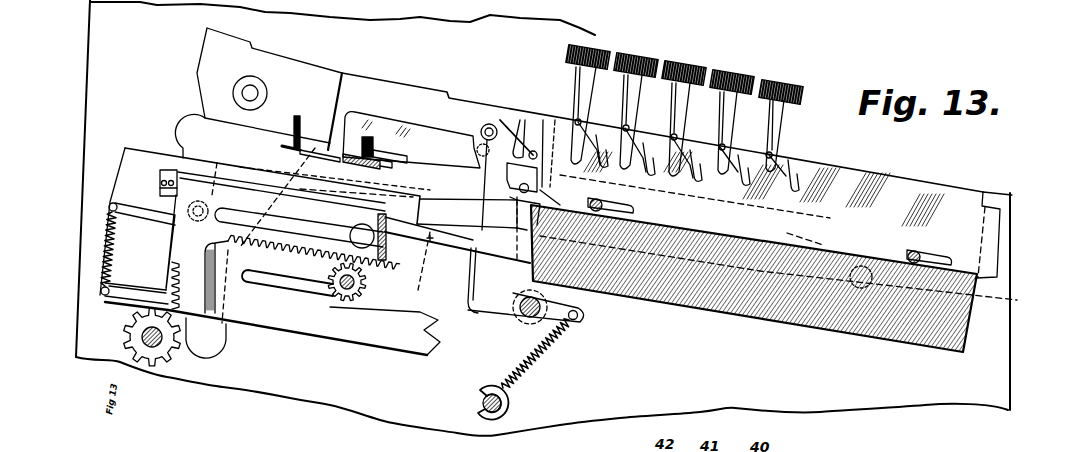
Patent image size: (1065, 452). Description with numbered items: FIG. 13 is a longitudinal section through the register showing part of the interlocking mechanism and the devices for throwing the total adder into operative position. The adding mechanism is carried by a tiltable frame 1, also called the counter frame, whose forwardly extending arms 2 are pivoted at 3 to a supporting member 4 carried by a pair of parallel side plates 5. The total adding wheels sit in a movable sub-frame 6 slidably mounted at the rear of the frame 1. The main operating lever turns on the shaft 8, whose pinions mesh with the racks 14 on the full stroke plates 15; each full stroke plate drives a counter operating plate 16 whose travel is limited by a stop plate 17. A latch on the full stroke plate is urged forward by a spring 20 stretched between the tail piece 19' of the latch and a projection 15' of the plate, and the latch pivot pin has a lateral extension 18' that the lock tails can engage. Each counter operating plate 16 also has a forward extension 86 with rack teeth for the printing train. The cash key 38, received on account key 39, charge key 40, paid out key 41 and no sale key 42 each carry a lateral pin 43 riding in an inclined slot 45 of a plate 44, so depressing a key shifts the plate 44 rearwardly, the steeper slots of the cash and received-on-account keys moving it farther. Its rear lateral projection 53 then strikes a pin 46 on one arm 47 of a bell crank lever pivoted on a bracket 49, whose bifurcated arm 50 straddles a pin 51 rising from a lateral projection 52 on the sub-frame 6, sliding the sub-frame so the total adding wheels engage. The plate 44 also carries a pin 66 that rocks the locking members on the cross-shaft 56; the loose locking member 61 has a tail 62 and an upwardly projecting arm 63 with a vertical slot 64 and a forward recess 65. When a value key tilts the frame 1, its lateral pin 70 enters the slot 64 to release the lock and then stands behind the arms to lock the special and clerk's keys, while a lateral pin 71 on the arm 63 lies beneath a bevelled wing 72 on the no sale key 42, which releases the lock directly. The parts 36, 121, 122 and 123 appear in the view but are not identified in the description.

The tiltable frame 1 is at (402, 102).
The forwardly extending arms 2 is at (806, 203).
The pivot 3 is at (888, 247).
The supporting member 4 is at (883, 327).
The side plates 5 is at (592, 48).
The sub-frame 6 is at (300, 72).
The shaft 8 is at (344, 300).
The racks 14 is at (280, 278).
The full stroke plates 15 is at (214, 278).
The projection 15' is at (128, 274).
The counter operating plate 16 is at (147, 148).
The stop plate 17 is at (440, 250).
The lateral extension 18' is at (145, 242).
The tail piece 19' is at (150, 189).
The spring 20 is at (128, 260).
The stud 36 is at (381, 261).
The cash key 38 is at (389, 219).
The received on account key 39 is at (734, 122).
The charge key 40 is at (685, 118).
The paid out key 41 is at (638, 111).
The no sale key 42 is at (590, 104).
The lateral pin 43 is at (685, 138).
The plate 44 is at (860, 173).
The inclined slots 45 is at (702, 163).
The pin 46 is at (375, 140).
The arm 47 is at (390, 162).
The bracket 49 is at (362, 166).
The arm 50 is at (327, 150).
The pin 51 is at (298, 118).
The lateral projection 52 is at (282, 147).
The lateral projection 53 is at (407, 157).
The cross-shaft 56 is at (515, 325).
The locking member 61 is at (470, 318).
The tail 62 is at (352, 235).
The arm 63 is at (483, 208).
The vertical slot 64 is at (515, 135).
The recess portion 65 is at (518, 213).
The pin 66 is at (563, 200).
The pin 70 is at (488, 124).
The lateral pin 71 is at (503, 177).
The wing 72 is at (540, 130).
The forward extension 86 is at (338, 330).
The shaft 121 is at (157, 347).
The gear 122 is at (133, 336).
The lug 123 is at (218, 338).